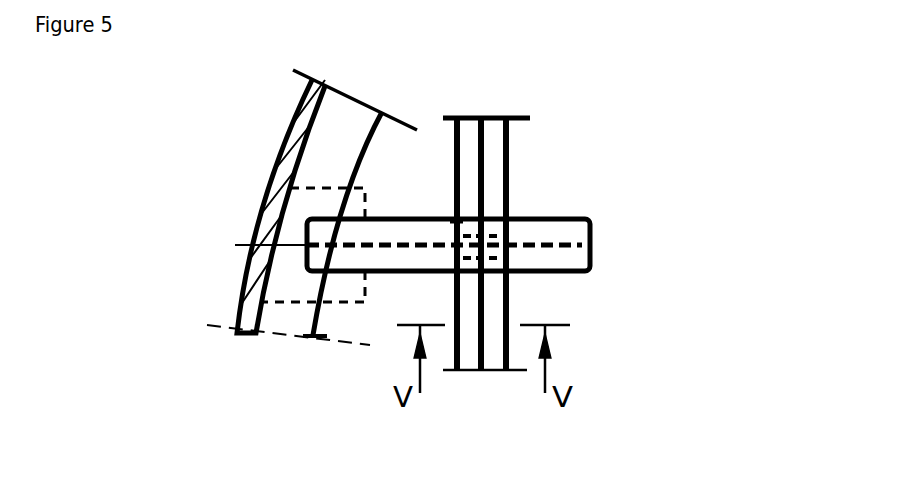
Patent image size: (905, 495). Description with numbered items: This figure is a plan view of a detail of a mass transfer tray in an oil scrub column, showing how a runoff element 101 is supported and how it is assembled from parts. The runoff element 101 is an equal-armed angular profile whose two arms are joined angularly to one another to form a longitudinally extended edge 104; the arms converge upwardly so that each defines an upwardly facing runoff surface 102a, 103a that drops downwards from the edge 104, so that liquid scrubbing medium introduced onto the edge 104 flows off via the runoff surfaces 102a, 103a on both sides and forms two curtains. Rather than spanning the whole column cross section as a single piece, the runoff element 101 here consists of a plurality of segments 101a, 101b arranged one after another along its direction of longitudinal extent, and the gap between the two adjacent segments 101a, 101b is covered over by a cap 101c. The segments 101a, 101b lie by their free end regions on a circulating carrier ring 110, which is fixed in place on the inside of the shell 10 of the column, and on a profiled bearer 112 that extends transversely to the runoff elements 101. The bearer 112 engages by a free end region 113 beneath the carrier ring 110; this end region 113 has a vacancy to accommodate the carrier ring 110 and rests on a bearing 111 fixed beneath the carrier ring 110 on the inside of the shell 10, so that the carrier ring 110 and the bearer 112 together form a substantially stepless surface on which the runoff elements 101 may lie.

The shell 10 is at (277, 148).
The carrier ring 110 is at (348, 120).
The bearing 111 is at (352, 288).
The free end region 113 is at (305, 262).
The bearer 112 is at (562, 260).
The runoff element 101 is at (511, 299).
The segment 101a is at (493, 350).
The segment 101b is at (472, 118).
The cap 101c is at (443, 216).
The runoff surface 102a is at (470, 186).
The runoff surface 103a is at (495, 147).
The edge 104 is at (487, 133).